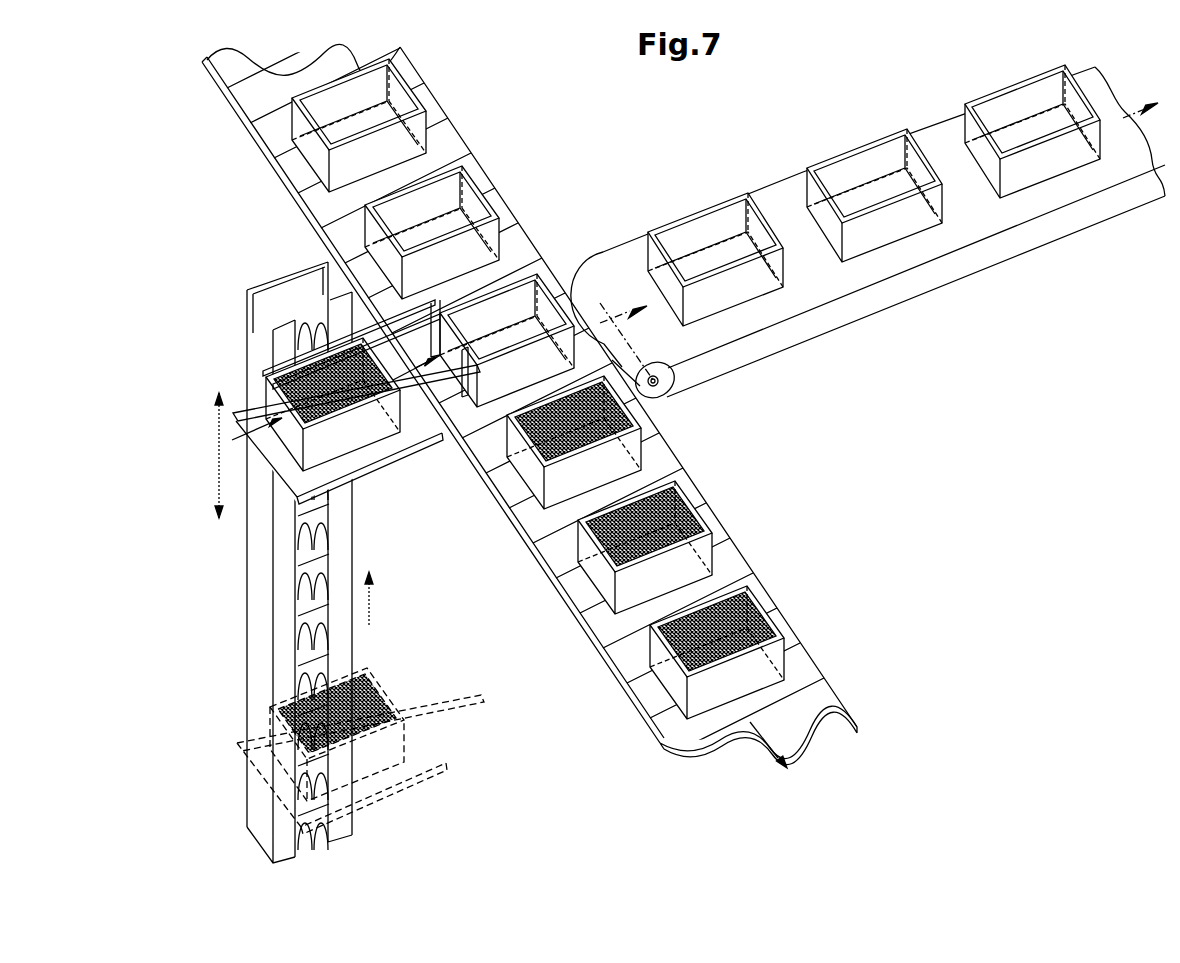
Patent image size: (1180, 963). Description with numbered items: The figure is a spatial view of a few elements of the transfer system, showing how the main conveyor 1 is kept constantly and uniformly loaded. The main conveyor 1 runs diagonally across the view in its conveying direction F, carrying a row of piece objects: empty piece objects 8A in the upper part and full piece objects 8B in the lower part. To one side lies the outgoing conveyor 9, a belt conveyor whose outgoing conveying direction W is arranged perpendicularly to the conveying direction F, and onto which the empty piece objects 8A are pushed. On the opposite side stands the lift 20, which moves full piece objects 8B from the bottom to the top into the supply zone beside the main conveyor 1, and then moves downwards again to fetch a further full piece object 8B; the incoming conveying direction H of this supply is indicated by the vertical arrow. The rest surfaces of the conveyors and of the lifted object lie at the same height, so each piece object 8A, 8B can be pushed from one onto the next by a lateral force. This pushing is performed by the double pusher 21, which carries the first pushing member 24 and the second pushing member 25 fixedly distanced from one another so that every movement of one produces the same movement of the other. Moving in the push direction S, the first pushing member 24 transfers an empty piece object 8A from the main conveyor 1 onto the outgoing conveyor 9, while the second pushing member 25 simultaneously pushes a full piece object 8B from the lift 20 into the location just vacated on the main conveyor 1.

The main conveyor 1 is at (848, 680).
The empty piece object 8A is at (523, 290).
The full piece object 8B is at (618, 459).
The outgoing conveyor 9 is at (928, 300).
The lift 20 is at (227, 588).
The double pusher 21 is at (288, 364).
The first pushing member 24 is at (466, 384).
The second pushing member 25 is at (264, 393).
The push direction S is at (432, 365).
The incoming conveying direction H is at (371, 600).
The outgoing conveying direction W is at (1149, 122).
The conveying direction F is at (762, 738).